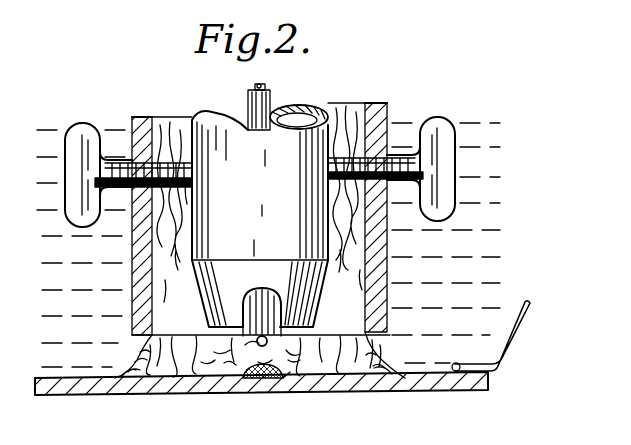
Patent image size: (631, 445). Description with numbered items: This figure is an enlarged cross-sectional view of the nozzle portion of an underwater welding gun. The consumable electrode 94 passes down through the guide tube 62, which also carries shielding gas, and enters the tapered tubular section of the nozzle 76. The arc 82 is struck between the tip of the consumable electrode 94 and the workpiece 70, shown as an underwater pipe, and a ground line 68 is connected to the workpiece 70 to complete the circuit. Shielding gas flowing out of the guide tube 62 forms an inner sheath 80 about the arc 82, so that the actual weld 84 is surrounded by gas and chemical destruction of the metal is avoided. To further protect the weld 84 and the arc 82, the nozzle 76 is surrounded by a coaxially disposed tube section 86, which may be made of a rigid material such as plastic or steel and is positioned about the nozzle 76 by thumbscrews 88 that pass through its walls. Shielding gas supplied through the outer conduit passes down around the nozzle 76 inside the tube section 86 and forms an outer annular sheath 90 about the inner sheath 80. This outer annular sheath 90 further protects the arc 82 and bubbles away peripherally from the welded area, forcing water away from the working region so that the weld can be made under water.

The guide tube 62 is at (254, 110).
The ground line 68 is at (534, 318).
The workpiece 70 is at (426, 389).
The nozzle 76 is at (313, 278).
The inner sheath 80 is at (213, 338).
The arc 82 is at (283, 380).
The weld 84 is at (262, 382).
The tube section 86 is at (136, 276).
The clamp knob 88 is at (85, 137).
The outer annular sheath 90 is at (182, 335).
The consumable electrode 94 is at (266, 88).